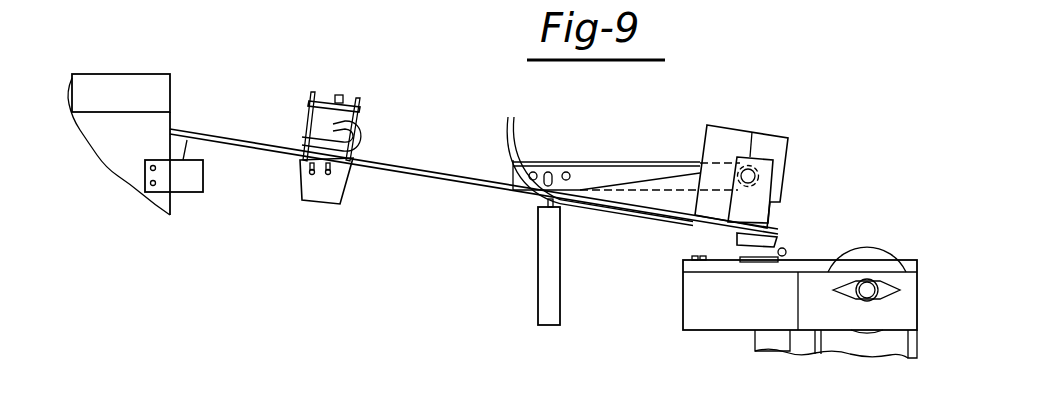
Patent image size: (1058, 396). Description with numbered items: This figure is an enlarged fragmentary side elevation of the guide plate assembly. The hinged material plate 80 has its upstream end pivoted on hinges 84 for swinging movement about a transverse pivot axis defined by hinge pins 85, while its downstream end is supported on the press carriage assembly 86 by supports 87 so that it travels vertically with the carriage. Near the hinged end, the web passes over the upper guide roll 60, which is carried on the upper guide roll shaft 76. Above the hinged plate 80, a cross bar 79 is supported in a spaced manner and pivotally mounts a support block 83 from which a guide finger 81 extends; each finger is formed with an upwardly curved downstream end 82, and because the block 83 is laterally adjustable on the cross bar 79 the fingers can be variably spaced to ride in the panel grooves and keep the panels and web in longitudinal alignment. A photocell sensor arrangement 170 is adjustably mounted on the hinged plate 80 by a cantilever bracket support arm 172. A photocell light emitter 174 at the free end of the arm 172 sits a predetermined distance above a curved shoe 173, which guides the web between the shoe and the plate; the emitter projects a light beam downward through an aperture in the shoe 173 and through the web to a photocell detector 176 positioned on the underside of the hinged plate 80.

The upper guide roll 60 is at (870, 255).
The upper guide roll shaft 76 is at (872, 290).
The cross bar 79 is at (750, 177).
The hinged material plate 80 is at (452, 180).
The guide fingers 81 is at (628, 207).
The upwardly curved downstream end 82 is at (515, 142).
The support block 83 is at (770, 142).
The hinges 84 is at (748, 262).
The hinge pins 85 is at (786, 250).
The press carriage assembly 86 is at (176, 105).
The supports 87 is at (188, 188).
The photocell sensor arrangement 170 is at (334, 100).
The cantilever bracket support arm 172 is at (306, 108).
The curved shoe 173 is at (341, 140).
The photocell light emitter 174 is at (339, 94).
The photocell detector 176 is at (334, 190).